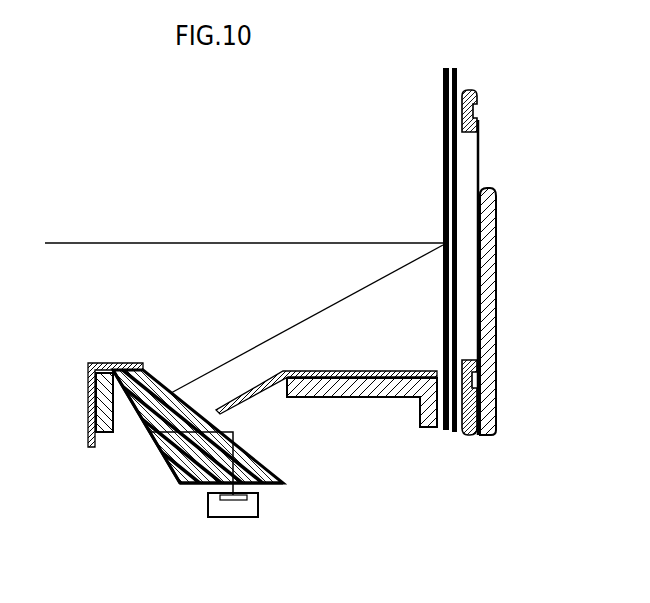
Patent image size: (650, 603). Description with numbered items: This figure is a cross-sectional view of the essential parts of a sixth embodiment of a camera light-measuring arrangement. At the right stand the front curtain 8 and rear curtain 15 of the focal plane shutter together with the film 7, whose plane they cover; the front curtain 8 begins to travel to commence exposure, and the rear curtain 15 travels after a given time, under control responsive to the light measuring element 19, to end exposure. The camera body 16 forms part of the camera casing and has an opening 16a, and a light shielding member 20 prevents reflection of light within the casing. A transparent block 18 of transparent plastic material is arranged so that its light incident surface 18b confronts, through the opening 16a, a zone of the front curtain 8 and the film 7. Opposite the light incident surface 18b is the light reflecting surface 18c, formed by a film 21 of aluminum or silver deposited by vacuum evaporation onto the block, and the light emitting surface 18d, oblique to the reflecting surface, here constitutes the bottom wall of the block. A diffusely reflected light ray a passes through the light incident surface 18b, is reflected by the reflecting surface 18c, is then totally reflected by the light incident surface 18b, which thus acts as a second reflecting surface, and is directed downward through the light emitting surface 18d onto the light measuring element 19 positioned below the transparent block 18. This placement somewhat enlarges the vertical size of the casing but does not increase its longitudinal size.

The film 7 is at (478, 157).
The front curtain 8 is at (443, 129).
The rear curtain 15 is at (462, 82).
The camera body 16 is at (103, 398).
The opening 16a is at (190, 367).
The transparent block 18 is at (207, 435).
The light incident surface 18b is at (234, 442).
The light reflecting surface 18c is at (153, 450).
The light emitting surface 18d is at (268, 483).
The light measuring element 19 is at (232, 517).
The light shielding member 20 is at (95, 363).
The film of aluminum or silver 21 is at (207, 435).
The diffusely reflected light ray a is at (348, 296).